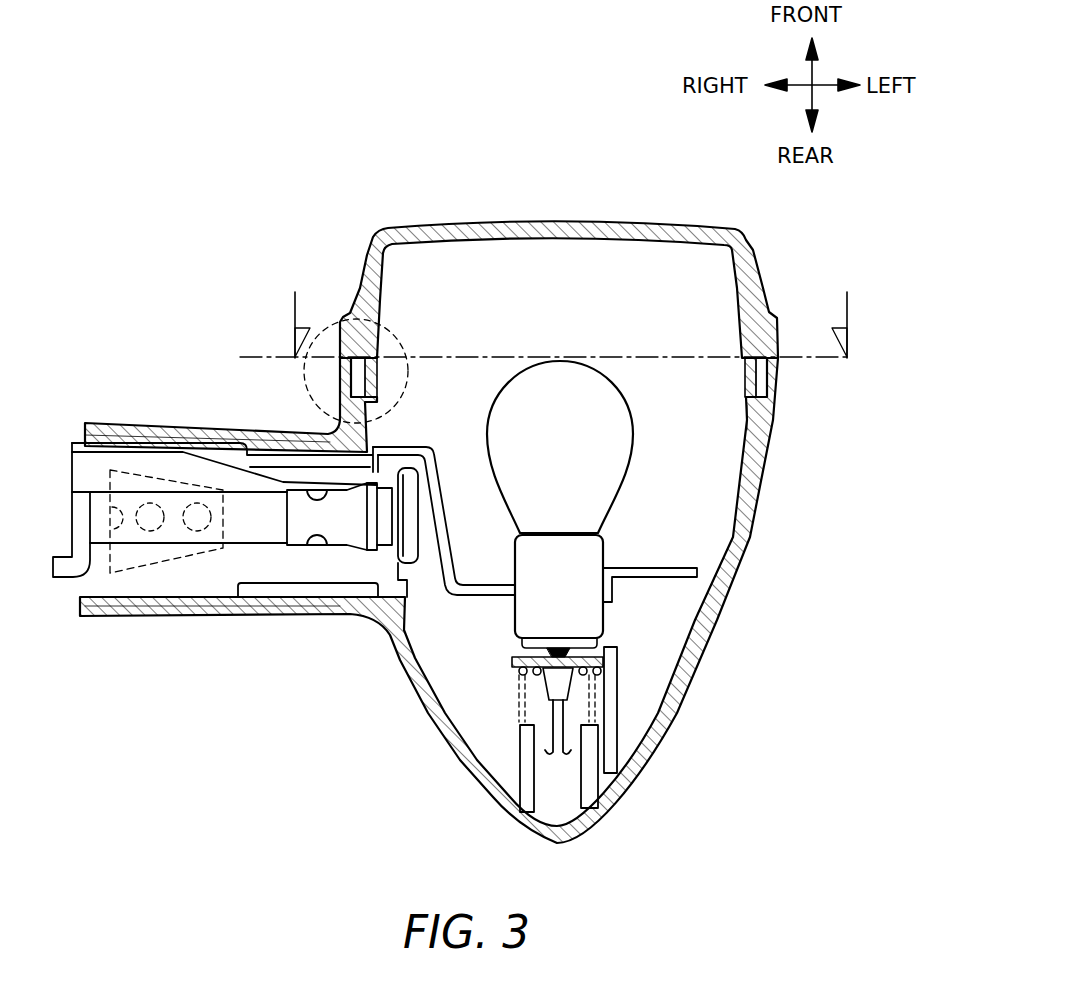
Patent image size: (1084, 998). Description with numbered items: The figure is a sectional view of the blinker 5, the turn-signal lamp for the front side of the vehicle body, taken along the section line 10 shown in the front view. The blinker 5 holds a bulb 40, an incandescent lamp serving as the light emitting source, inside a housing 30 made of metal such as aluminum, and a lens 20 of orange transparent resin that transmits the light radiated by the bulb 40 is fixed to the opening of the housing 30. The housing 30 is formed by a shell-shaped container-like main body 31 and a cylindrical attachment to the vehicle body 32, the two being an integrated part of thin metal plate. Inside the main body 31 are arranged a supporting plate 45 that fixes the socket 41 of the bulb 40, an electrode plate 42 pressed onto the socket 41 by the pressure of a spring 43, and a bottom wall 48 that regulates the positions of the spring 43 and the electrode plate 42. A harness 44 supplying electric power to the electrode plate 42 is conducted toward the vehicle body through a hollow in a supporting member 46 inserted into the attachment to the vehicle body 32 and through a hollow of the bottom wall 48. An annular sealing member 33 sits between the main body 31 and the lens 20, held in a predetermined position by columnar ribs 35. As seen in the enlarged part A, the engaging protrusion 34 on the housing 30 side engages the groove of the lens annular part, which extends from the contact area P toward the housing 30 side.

The blinker 5 is at (268, 143).
The section line 10 is at (546, 325).
The lens 20 is at (538, 223).
The housing 30 is at (752, 545).
The main body 31 is at (737, 597).
The attachment to the vehicle body 32 is at (291, 612).
The annular sealing member 33 is at (330, 404).
The engaging protrusion 34 is at (372, 362).
The columnar rib 35 is at (748, 424).
The bulb 40 is at (607, 428).
The socket 41 is at (587, 626).
The electrode plate 42 is at (600, 666).
The spring 43 is at (598, 692).
The harness 44 is at (553, 752).
The supporting plate 45 is at (473, 593).
The supporting member 46 is at (231, 557).
The bottom wall 48 is at (338, 518).
The part A is at (302, 405).
The contact area P is at (623, 357).